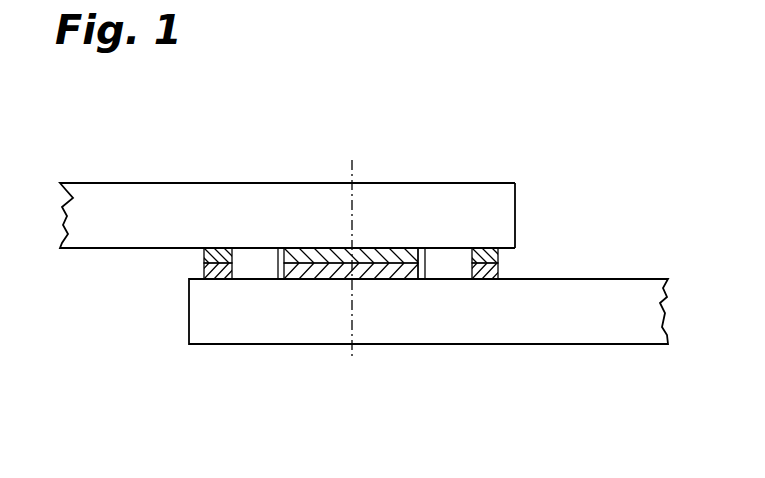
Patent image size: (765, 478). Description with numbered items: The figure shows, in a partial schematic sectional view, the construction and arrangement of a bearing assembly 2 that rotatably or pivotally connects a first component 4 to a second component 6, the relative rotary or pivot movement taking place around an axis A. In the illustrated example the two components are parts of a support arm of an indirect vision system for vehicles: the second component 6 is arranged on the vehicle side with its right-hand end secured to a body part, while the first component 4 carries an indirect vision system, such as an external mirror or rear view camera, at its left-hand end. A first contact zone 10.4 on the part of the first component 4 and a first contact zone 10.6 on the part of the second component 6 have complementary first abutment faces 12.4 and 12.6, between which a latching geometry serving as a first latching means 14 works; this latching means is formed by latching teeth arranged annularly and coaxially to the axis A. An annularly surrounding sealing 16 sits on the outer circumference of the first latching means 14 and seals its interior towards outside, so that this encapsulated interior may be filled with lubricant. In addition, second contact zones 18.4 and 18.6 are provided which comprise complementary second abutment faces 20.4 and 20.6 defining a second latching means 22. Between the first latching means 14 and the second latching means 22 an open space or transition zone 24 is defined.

The bearing assembly 2 is at (528, 157).
The first component 4 is at (92, 217).
The second component 6 is at (373, 328).
The first contact zone 10.4 is at (295, 233).
The first contact zone 10.6 is at (292, 291).
The first abutment face 12.4 is at (320, 252).
The first abutment face 12.6 is at (332, 282).
The first latching means 14 is at (408, 292).
The sealing 16 is at (420, 250).
The second contact zone 18.4 is at (513, 250).
The second contact zone 18.6 is at (515, 268).
The second abutment face 20.4 is at (210, 248).
The second abutment face 20.6 is at (208, 275).
The second latching means 22 is at (177, 270).
The transition zone 24 is at (450, 262).
The axis A is at (341, 237).